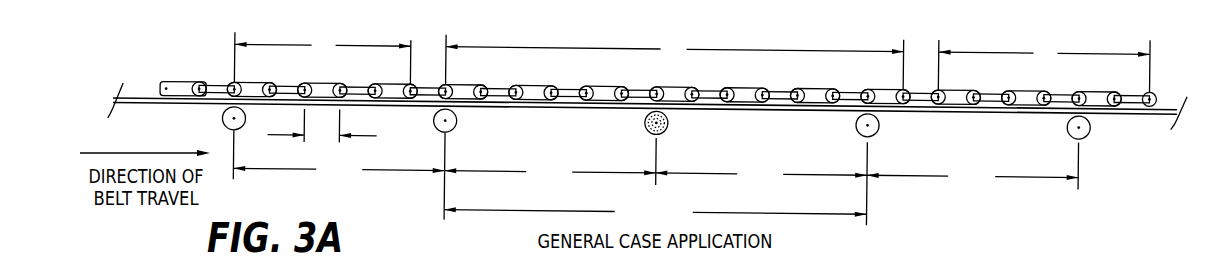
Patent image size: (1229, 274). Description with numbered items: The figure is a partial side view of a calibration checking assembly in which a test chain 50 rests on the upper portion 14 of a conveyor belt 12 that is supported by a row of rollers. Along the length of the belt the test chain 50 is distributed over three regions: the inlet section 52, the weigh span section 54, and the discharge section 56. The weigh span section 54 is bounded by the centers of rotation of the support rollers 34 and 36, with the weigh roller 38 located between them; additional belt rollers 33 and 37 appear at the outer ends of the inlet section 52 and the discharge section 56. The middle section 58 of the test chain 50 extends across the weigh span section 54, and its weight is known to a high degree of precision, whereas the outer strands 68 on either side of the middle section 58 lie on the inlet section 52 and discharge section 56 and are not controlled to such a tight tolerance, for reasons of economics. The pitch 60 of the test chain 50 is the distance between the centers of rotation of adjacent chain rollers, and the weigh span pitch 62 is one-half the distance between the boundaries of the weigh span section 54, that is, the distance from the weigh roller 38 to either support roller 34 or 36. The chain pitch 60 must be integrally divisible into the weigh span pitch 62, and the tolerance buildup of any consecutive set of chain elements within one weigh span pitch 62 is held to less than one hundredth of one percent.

The conveyor belt 12 is at (141, 96).
The upper portion 14 is at (1170, 96).
The first roller 33 is at (222, 117).
The support roller 34 is at (433, 117).
The support roller 36 is at (856, 117).
The fourth roller 37 is at (1067, 117).
The weigh roller 38 is at (645, 117).
The test chain 50 is at (176, 88).
The inlet section 52 is at (338, 169).
The weigh span section 54 is at (655, 212).
The discharge section 56 is at (972, 176).
The middle section 58 is at (675, 49).
The pitch 60 is at (321, 135).
The weigh span pitch 62 is at (655, 173).
The outer strands 68 is at (692, 49).